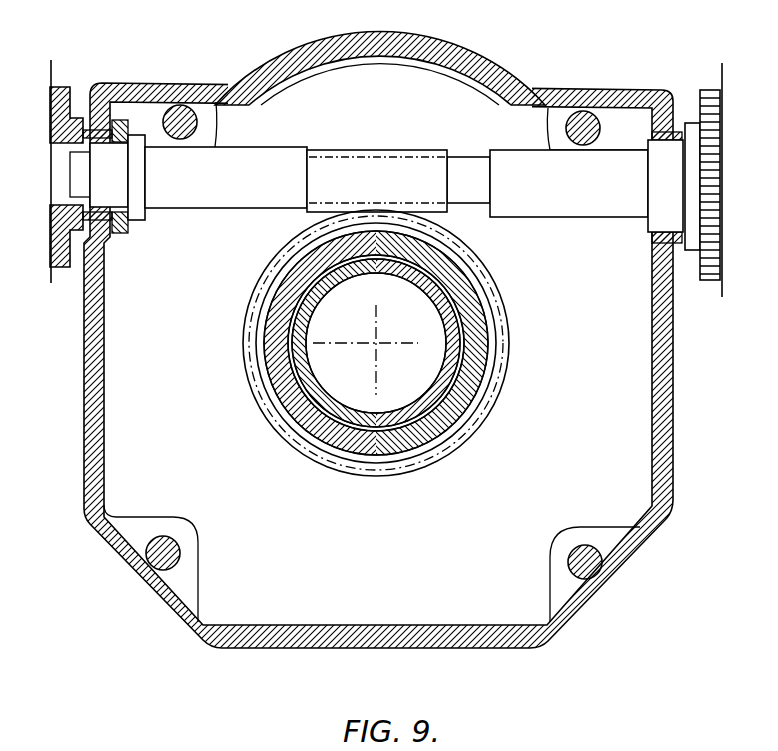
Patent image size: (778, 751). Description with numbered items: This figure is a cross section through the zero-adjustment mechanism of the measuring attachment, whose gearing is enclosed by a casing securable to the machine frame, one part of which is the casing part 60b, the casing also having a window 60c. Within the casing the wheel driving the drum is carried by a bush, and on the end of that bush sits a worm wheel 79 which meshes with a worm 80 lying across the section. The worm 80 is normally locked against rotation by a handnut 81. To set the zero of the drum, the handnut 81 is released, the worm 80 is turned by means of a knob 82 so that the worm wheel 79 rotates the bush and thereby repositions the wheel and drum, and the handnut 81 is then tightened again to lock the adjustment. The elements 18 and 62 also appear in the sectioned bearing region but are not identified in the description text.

The casing part 60b is at (92, 432).
The window 60c is at (483, 66).
The worm 80 is at (423, 156).
The worm wheel 79 is at (464, 262).
The bearing outer ring 18 is at (474, 310).
The bearing inner ring 62 is at (458, 338).
The handnut 81 is at (63, 268).
The knob 82 is at (712, 282).